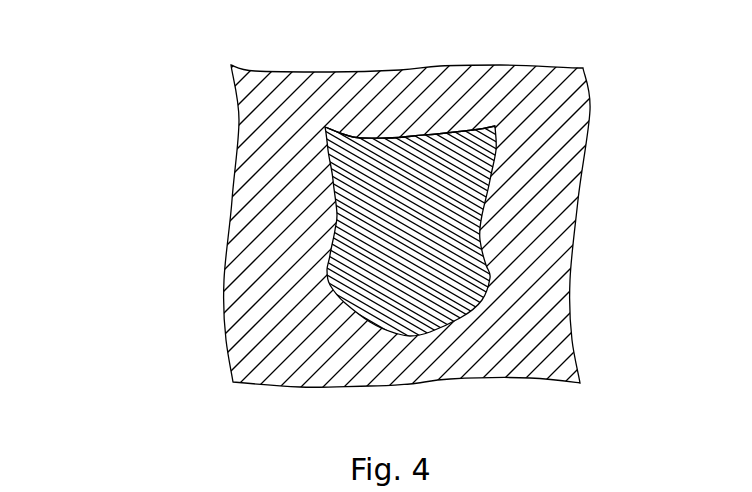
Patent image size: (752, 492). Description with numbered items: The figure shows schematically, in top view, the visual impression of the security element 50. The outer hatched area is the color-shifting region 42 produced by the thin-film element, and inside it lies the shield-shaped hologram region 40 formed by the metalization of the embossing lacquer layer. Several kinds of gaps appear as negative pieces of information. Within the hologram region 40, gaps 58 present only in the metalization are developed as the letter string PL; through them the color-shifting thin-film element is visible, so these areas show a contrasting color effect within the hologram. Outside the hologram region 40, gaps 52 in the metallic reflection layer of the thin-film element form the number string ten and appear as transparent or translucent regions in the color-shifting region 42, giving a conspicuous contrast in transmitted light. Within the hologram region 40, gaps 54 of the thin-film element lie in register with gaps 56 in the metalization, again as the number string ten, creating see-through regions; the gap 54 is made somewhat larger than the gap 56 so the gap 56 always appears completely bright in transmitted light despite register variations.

The security element 50 is at (108, 68).
The color-shifting region 42 is at (292, 83).
The hologram region 40 is at (477, 133).
The gaps in the metalization 58 is at (419, 132).
The gaps in the metallic reflection layer 52 is at (265, 176).
The gaps of the thin-film element 54 is at (432, 220).
The gaps in the metalization 56 is at (407, 224).